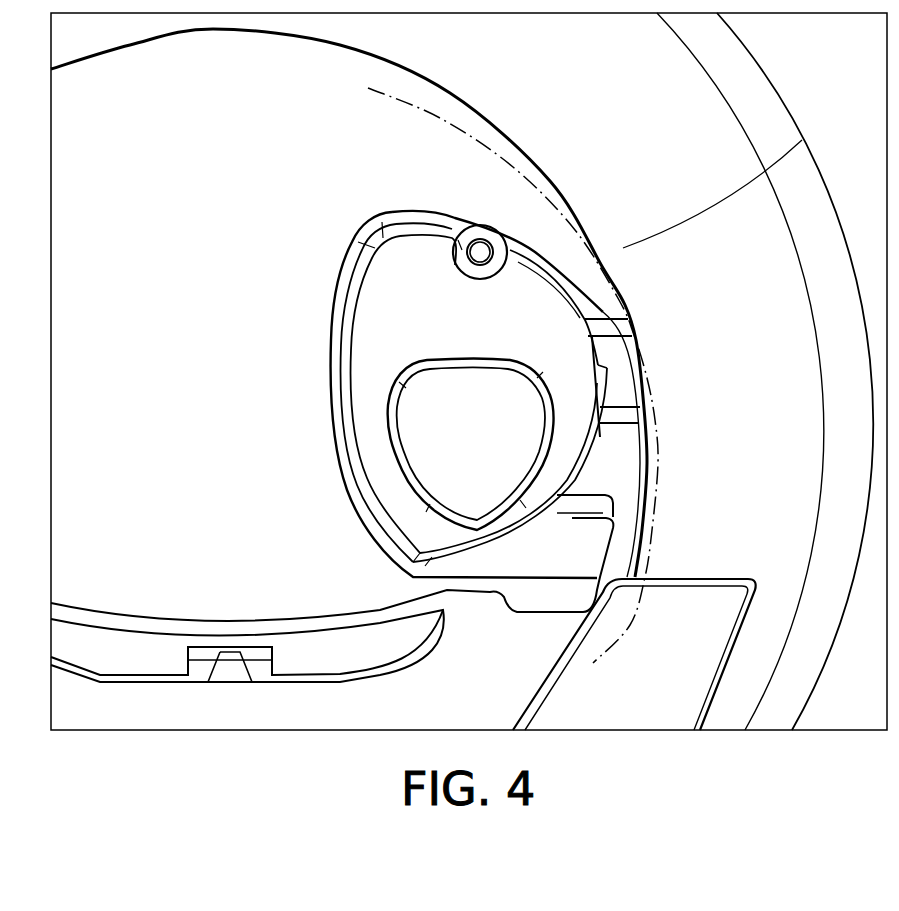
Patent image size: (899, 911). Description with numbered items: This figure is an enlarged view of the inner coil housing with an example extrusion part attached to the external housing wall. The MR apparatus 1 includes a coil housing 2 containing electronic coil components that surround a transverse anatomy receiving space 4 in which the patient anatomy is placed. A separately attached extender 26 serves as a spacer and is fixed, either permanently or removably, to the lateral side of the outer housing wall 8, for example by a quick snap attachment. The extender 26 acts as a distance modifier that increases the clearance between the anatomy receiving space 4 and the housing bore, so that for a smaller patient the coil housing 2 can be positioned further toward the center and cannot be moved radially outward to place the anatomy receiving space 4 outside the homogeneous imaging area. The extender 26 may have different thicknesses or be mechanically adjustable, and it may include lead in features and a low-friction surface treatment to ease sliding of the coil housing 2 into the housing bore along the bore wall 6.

The MR apparatus 1 is at (836, 77).
The coil housing 2 is at (316, 268).
The anatomy receiving space 4 is at (478, 444).
The bore wall 6 is at (649, 470).
The outer housing wall 8 is at (591, 438).
The extender 26 is at (616, 392).